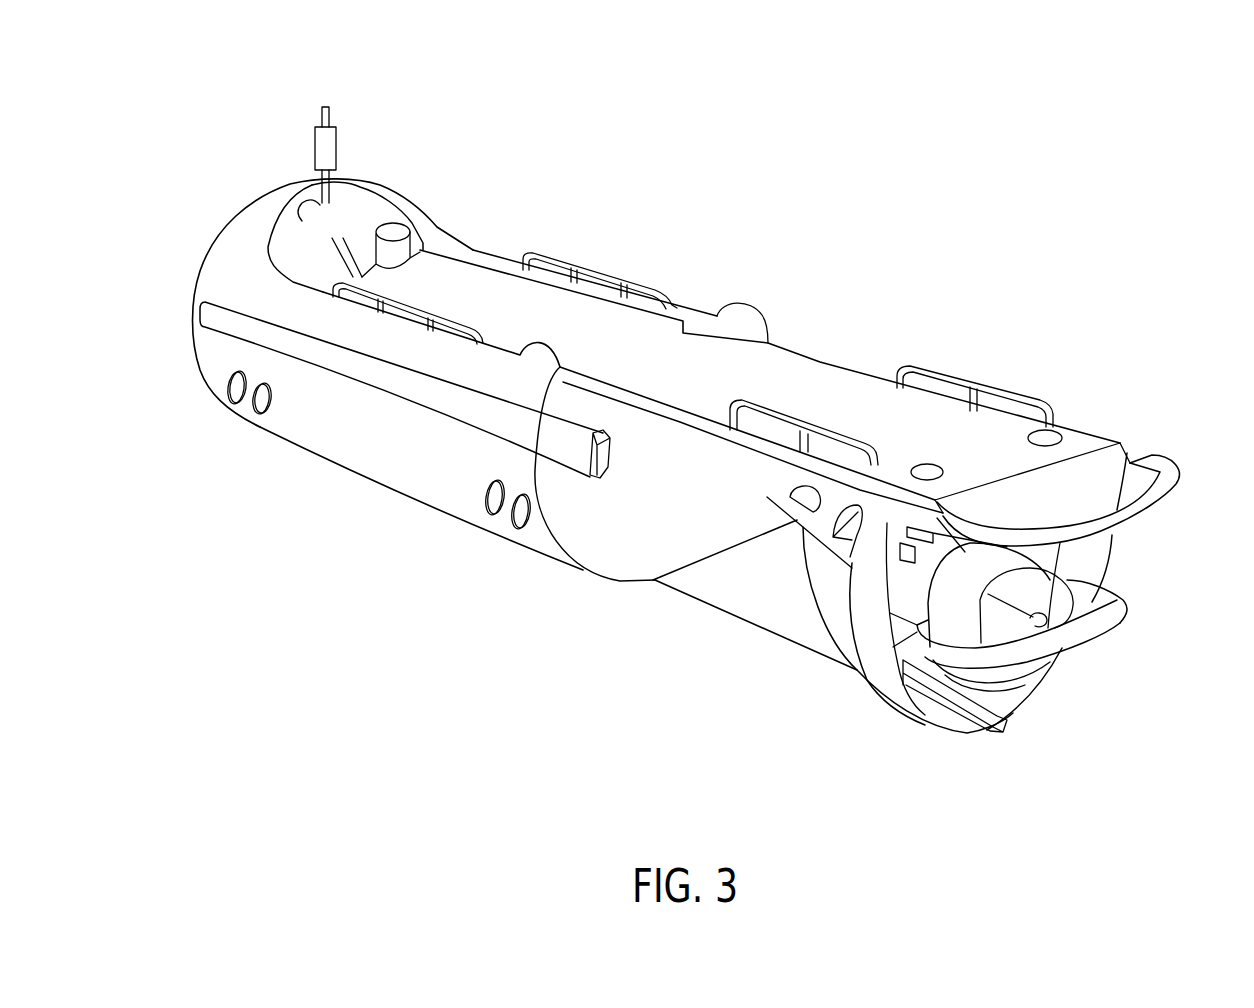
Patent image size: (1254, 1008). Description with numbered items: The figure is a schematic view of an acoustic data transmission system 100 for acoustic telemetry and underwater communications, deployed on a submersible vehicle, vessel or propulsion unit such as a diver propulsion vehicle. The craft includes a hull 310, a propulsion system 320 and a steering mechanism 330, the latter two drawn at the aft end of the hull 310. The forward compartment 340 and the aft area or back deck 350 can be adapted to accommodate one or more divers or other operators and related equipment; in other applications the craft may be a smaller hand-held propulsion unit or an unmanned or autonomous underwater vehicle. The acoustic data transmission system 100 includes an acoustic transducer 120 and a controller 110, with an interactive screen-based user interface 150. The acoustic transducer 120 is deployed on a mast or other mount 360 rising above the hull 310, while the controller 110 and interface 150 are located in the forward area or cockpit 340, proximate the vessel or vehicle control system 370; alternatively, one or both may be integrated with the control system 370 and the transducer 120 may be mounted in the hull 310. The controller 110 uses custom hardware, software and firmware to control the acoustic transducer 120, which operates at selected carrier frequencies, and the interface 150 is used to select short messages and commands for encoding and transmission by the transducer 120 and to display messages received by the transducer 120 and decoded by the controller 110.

The acoustic data transmission system 100 is at (350, 58).
The controller 110 is at (383, 180).
The acoustic transducer 120 is at (337, 138).
The interactive screen-based user interface 150 is at (345, 238).
The hull 310 is at (220, 256).
The propulsion system 320 is at (1130, 578).
The steering mechanism 330 is at (1087, 623).
The forward compartment 340 is at (615, 247).
The aft area or back deck 350 is at (980, 358).
The mast or mount 360 is at (322, 106).
The vessel or vehicle control system 370 is at (258, 190).